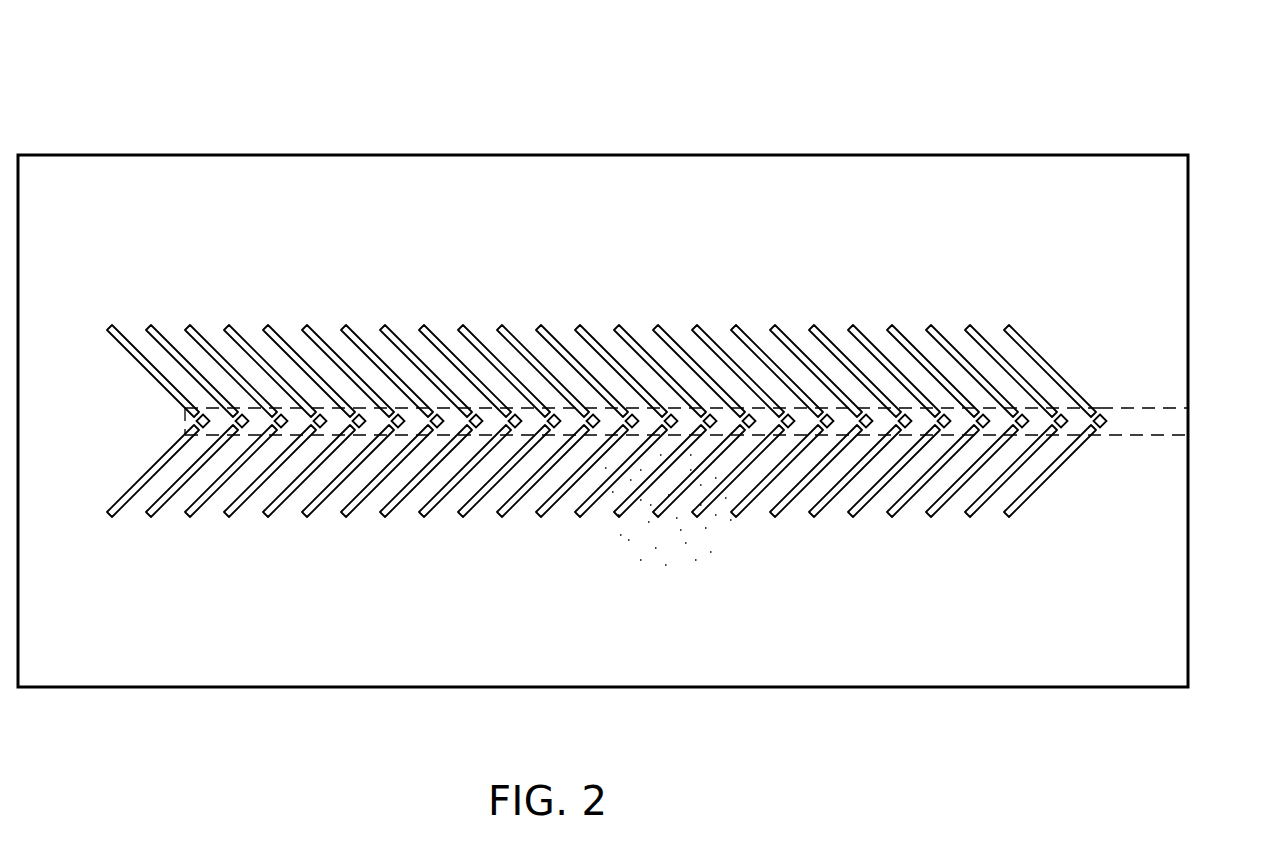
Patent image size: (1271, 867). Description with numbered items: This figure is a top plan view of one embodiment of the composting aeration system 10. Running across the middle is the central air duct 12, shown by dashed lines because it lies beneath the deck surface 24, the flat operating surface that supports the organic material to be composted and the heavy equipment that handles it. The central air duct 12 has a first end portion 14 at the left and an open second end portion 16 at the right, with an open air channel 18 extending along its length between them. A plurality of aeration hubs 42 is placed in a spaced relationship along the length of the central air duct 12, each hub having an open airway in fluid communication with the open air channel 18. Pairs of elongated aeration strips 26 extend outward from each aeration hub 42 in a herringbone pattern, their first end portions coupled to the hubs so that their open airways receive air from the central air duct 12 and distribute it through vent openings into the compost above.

The composting aeration system 10 is at (380, 146).
The central air duct 12 is at (1127, 408).
The first end portion 14 is at (182, 421).
The open second end portion 16 is at (1173, 460).
The open air channel 18 is at (1188, 412).
The deck surface 24 is at (627, 231).
The elongated aeration strips 26 is at (952, 357).
The aeration hubs 42 is at (1022, 423).